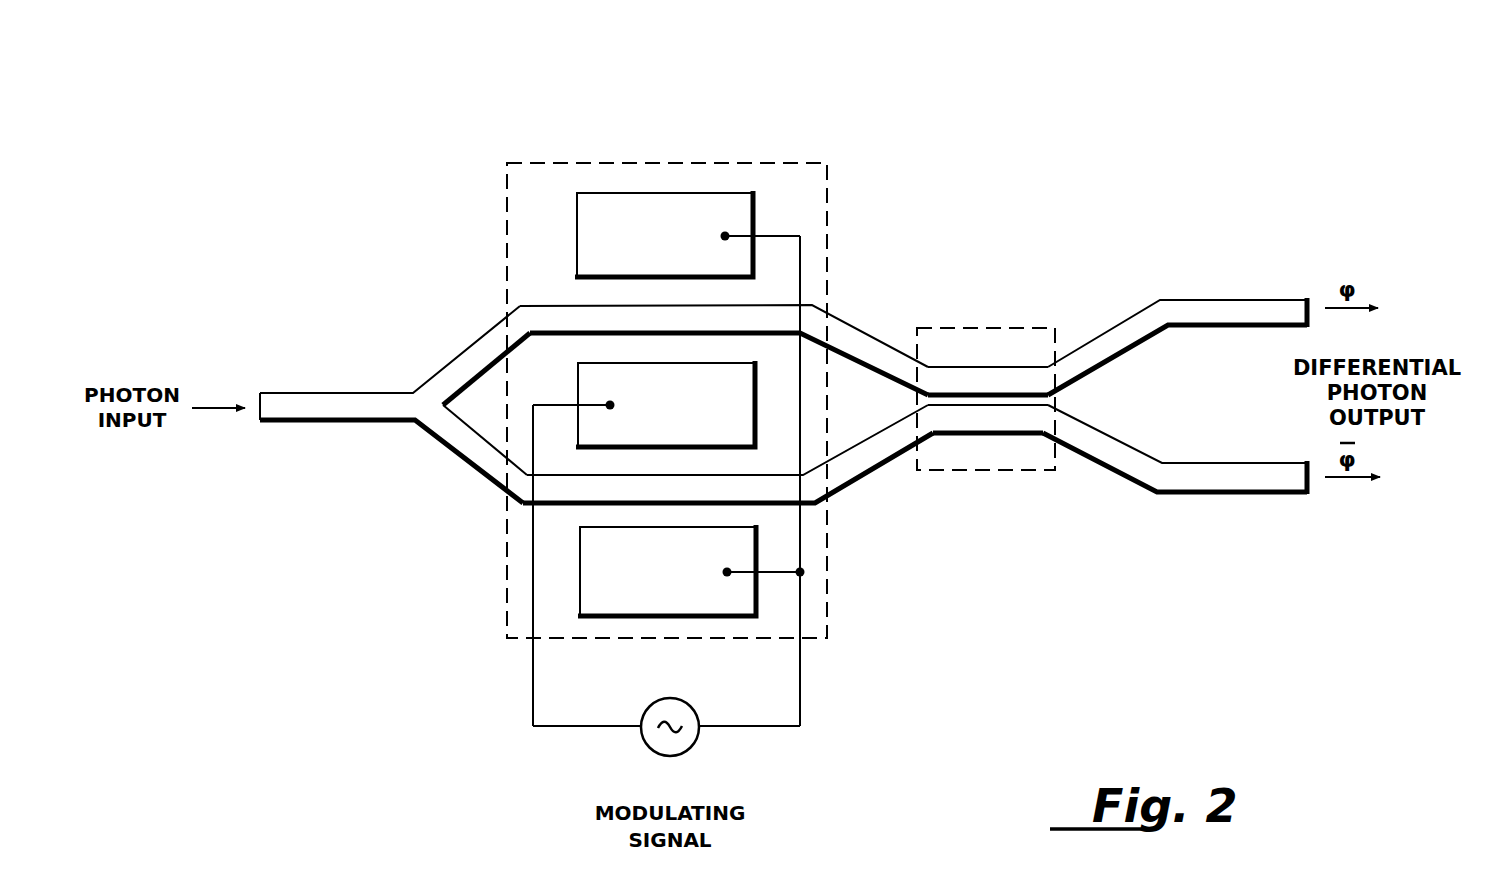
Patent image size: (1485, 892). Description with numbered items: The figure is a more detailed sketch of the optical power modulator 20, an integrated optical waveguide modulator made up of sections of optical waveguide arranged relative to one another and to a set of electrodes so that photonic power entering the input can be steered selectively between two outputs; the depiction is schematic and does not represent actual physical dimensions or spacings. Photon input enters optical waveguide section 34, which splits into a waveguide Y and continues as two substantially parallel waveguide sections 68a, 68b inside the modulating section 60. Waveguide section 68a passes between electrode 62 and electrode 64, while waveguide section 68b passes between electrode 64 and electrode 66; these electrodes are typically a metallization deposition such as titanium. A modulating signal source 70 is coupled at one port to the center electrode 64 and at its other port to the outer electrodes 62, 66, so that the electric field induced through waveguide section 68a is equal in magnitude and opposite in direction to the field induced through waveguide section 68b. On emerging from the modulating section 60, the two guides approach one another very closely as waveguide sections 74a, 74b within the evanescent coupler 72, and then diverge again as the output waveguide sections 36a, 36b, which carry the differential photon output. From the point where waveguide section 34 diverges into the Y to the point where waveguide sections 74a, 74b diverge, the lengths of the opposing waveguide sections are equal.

The optical power modulator 20 is at (368, 136).
The optical waveguide section 34 is at (308, 397).
The waveguide section 36a is at (1202, 305).
The waveguide section 36b is at (1195, 485).
The modulating section 60 is at (603, 163).
The electrode 62 is at (577, 222).
The electrode 64 is at (578, 378).
The electrode 66 is at (580, 577).
The waveguide section 68a is at (558, 312).
The waveguide section 68b is at (563, 482).
The modulating signal source 70 is at (675, 756).
The evanescent coupler 72 is at (943, 332).
The waveguide section 74a is at (955, 373).
The waveguide section 74b is at (958, 425).